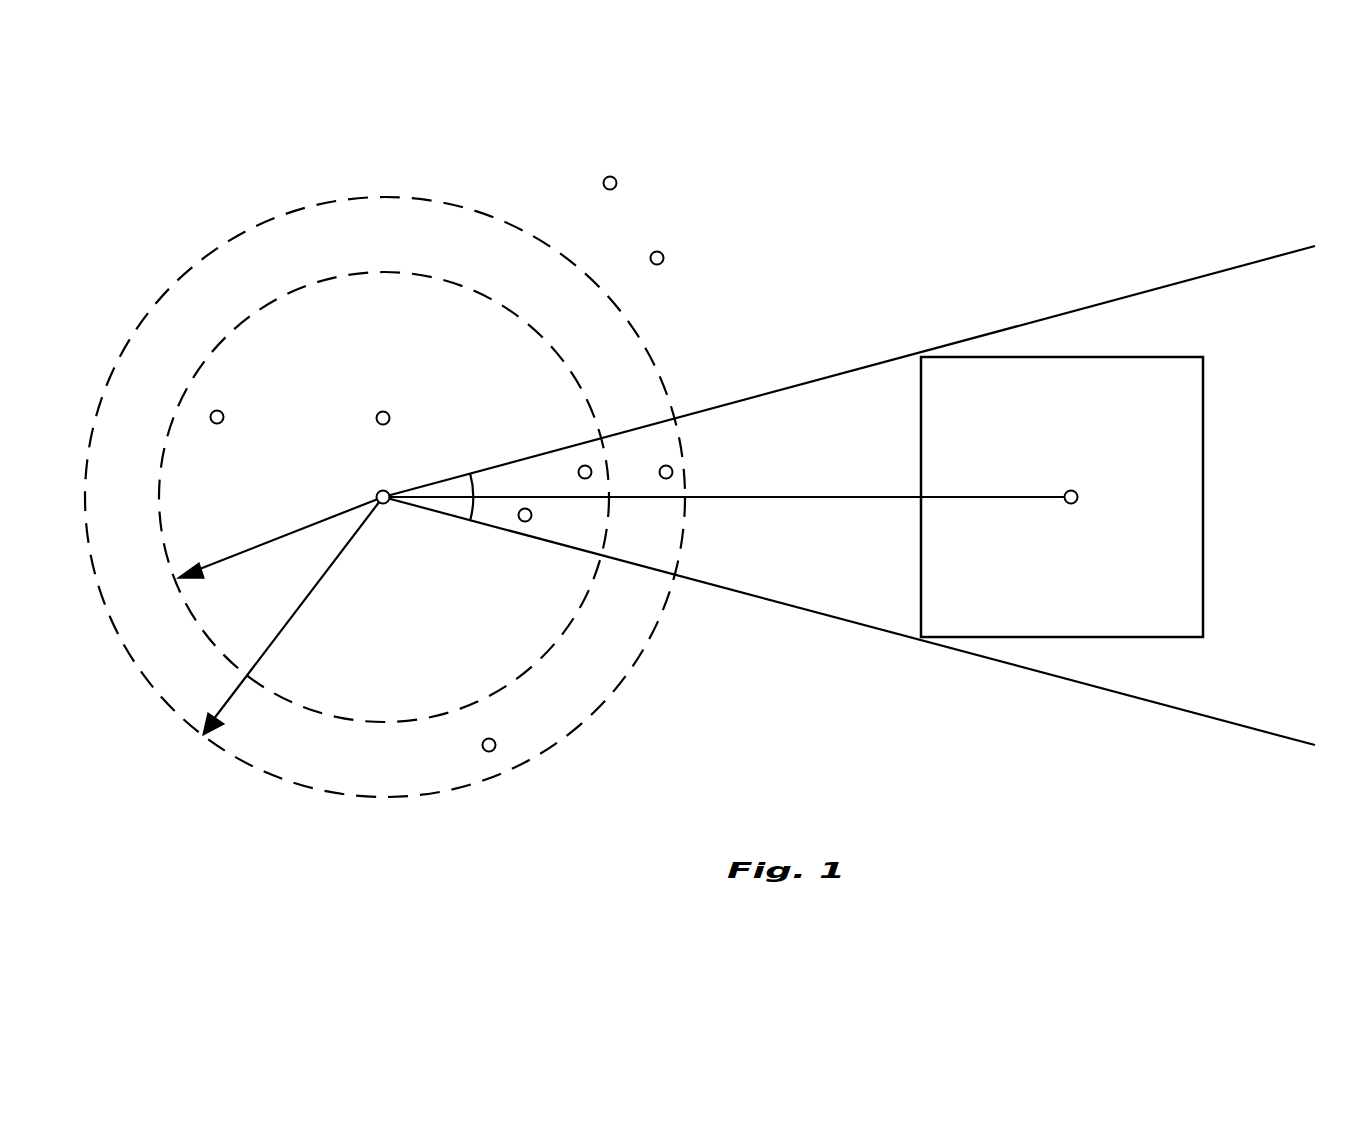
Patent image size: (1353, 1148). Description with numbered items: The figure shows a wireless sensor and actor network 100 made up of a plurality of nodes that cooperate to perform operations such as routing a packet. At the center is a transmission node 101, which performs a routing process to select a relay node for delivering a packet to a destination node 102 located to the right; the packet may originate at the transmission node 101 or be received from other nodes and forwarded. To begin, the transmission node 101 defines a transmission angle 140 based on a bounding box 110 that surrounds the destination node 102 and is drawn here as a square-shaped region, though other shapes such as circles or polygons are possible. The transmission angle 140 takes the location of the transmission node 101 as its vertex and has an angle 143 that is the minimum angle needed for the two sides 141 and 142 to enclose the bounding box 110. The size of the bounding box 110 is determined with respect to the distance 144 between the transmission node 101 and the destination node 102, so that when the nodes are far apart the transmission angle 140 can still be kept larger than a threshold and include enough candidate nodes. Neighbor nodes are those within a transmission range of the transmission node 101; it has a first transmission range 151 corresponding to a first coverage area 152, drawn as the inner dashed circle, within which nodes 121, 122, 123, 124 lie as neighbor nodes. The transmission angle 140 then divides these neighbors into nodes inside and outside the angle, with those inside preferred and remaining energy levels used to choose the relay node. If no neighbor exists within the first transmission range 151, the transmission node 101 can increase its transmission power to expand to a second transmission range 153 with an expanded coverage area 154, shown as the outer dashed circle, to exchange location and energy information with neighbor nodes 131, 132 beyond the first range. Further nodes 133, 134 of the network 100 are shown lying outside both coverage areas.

The wireless sensor and actor network 100 is at (996, 160).
The transmission node 101 is at (388, 505).
The destination node 102 is at (1077, 491).
The bounding box 110 is at (1205, 408).
The node 121 is at (521, 508).
The node 122 is at (580, 466).
The node 123 is at (388, 411).
The node 124 is at (222, 410).
The neighbor node 131 is at (672, 466).
The neighbor node 132 is at (493, 752).
The node 133 is at (616, 178).
The node 134 is at (663, 252).
The transmission angle 140 is at (783, 548).
The side of the transmission angle 141 is at (876, 366).
The side of the transmission angle 142 is at (879, 630).
The angle 143 is at (476, 516).
The distance 144 is at (790, 497).
The first transmission range 151 is at (268, 543).
The first coverage area 152 is at (232, 328).
The second transmission range 153 is at (275, 643).
The expanded coverage area 154 is at (280, 778).